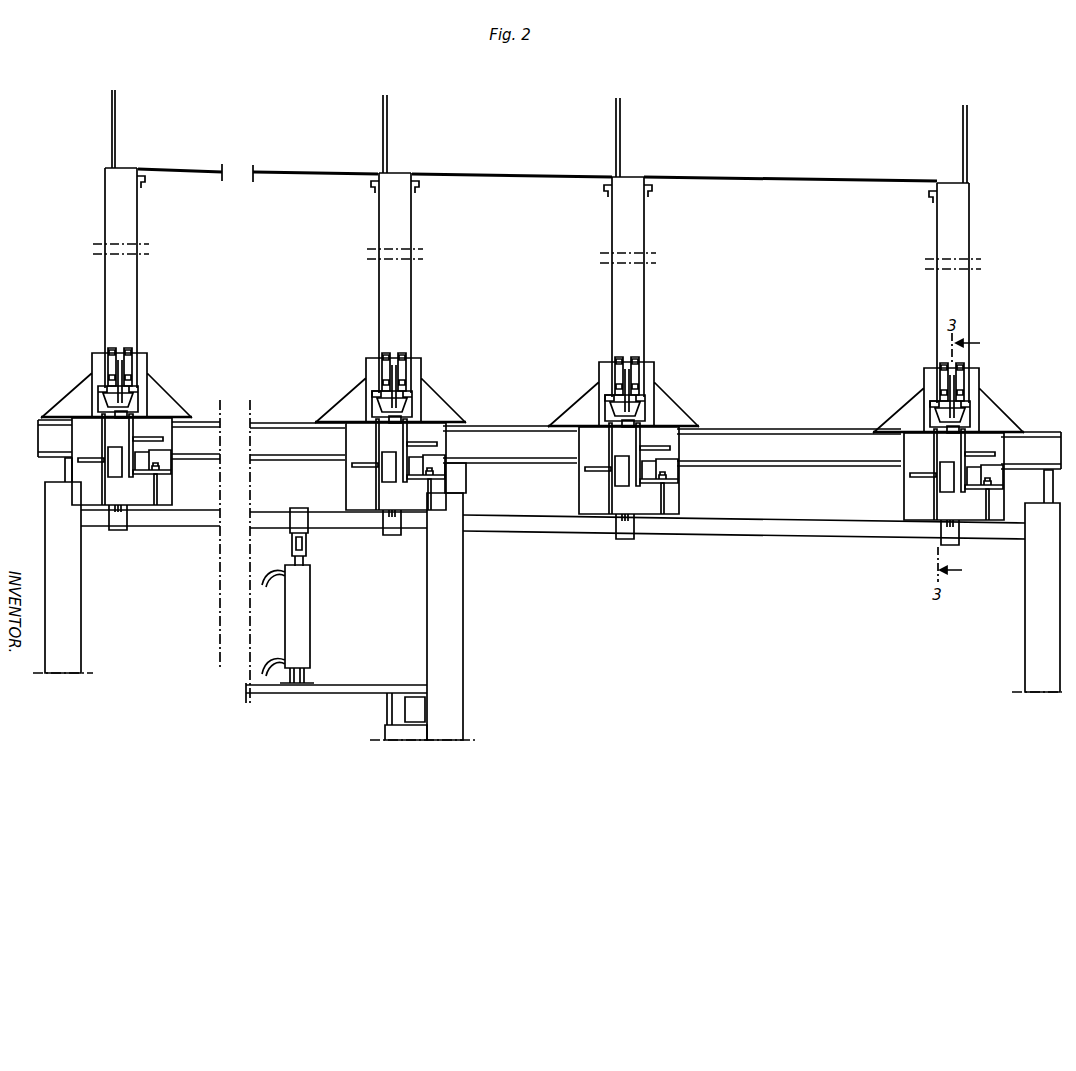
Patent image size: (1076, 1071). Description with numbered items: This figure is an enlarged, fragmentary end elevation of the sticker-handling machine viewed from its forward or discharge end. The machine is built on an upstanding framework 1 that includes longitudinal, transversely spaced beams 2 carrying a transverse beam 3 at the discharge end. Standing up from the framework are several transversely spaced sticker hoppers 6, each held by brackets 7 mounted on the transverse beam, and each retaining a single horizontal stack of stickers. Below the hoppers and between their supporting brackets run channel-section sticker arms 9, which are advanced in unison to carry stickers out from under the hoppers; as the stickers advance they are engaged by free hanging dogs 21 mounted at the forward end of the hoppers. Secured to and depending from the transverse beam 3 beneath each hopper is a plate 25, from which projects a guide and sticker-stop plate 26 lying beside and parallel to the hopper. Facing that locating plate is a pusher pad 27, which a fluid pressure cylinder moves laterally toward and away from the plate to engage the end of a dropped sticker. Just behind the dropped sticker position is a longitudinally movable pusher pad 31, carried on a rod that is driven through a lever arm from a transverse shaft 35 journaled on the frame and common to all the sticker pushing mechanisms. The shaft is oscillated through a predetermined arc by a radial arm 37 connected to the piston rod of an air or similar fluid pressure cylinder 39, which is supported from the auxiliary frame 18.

The framework 1 is at (469, 608).
The longitudinal beams 2 is at (53, 470).
The transverse beam 3 is at (770, 435).
The sticker hopper 6 is at (537, 285).
The bracket 7 is at (24, 360).
The sticker arm 9 is at (558, 402).
The auxiliary frame 18 is at (363, 693).
The free hanging dog 21 is at (623, 384).
The plate 25 is at (538, 479).
The guide and sticker-stop plate 26 is at (505, 466).
The pusher pad 27 is at (568, 473).
The longitudinally movable pusher pad 31 is at (531, 480).
The transverse shaft 35 is at (768, 531).
The radial arm 37 is at (308, 542).
The fluid pressure cylinder 39 is at (303, 627).